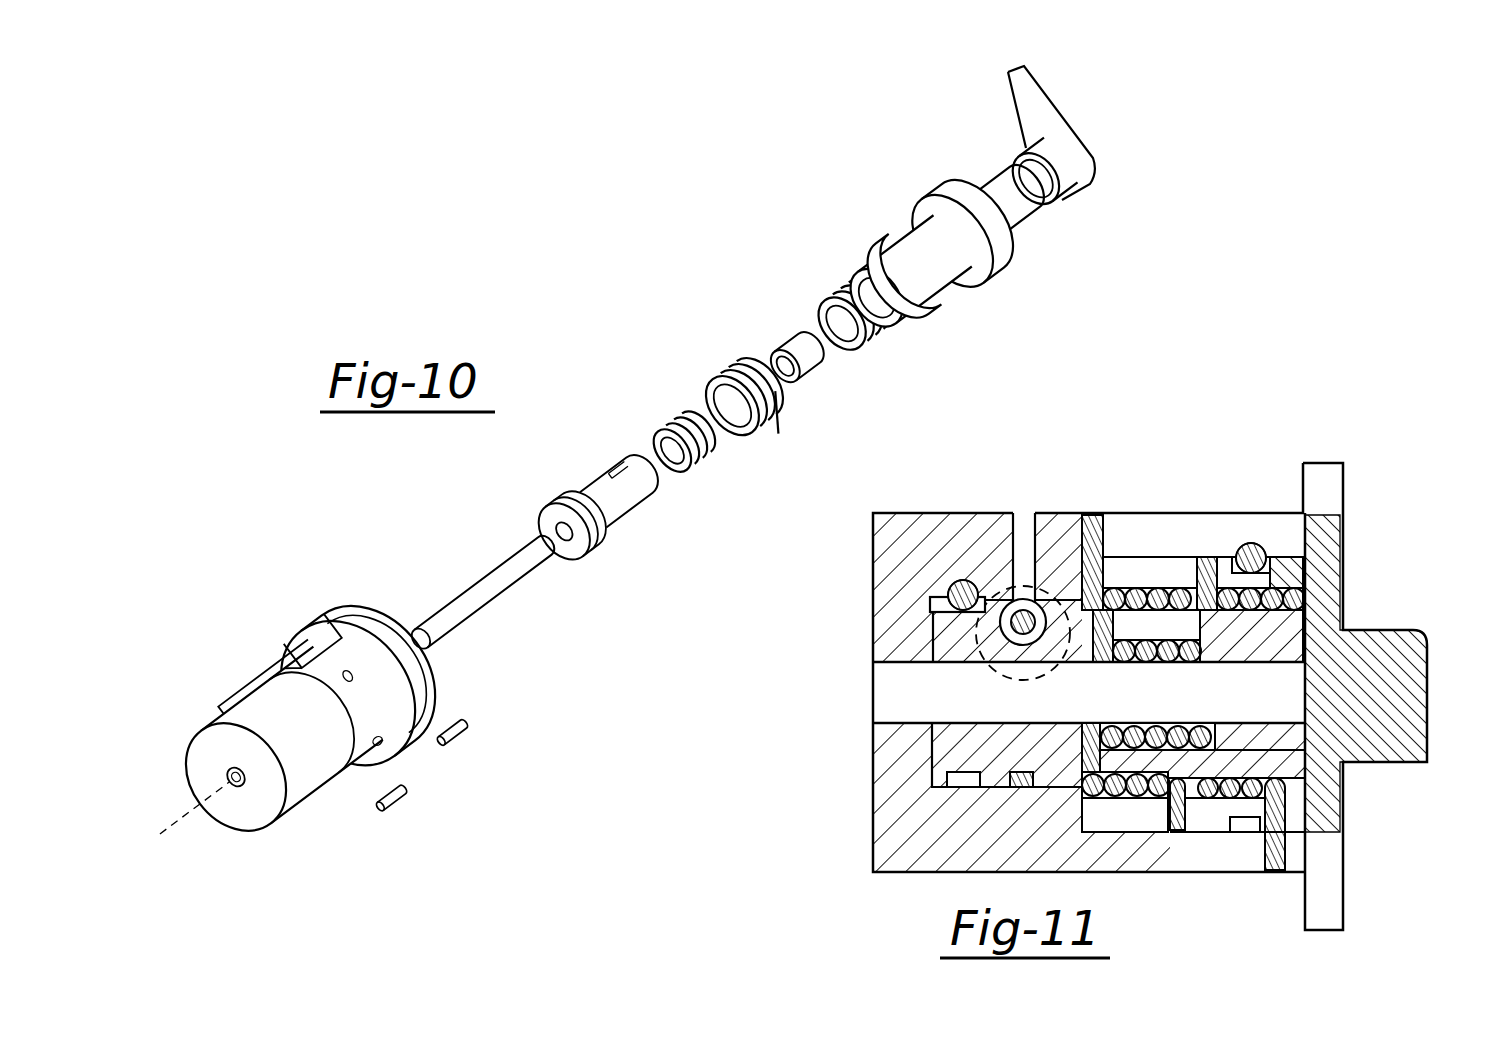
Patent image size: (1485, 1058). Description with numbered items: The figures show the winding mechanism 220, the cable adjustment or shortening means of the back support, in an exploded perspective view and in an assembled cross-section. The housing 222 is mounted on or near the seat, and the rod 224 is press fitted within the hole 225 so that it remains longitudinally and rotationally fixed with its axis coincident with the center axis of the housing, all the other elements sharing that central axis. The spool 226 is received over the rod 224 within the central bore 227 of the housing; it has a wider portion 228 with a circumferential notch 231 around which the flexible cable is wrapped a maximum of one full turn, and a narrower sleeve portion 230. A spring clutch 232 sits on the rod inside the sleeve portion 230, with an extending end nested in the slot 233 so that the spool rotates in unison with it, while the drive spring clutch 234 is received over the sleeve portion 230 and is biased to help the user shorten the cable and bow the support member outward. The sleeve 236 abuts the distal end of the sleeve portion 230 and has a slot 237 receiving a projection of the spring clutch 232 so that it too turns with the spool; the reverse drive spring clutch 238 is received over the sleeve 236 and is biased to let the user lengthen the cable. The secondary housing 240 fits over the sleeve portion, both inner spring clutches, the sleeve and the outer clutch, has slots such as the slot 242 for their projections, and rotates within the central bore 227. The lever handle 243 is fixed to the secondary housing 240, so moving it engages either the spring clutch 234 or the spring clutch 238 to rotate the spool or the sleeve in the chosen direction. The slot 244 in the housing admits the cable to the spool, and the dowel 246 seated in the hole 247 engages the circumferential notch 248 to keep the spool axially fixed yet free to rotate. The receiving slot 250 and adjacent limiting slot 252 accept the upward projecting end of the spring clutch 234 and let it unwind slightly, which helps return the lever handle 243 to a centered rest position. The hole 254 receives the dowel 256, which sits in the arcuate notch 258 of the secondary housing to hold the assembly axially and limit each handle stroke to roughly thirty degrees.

In FIG. 10, the winding mechanism 220 is at (583, 371).
In FIG. 11, the winding mechanism 220 is at (1240, 445).
In FIG. 10, the housing 222 is at (312, 810).
In FIG. 11, the housing 222 is at (873, 560).
In FIG. 10, the rod 224 is at (485, 572).
In FIG. 11, the rod 224 is at (1053, 708).
In FIG. 10, the hole 225 is at (225, 785).
In FIG. 10, the spool 226 is at (591, 473).
In FIG. 11, the central bore 227 is at (1180, 560).
In FIG. 10, the portion 228 is at (565, 495).
In FIG. 11, the portion 228 is at (932, 735).
In FIG. 10, the sleeve portion 230 is at (635, 527).
In FIG. 10, the circumferential notch 231 is at (615, 543).
In FIG. 11, the circumferential notch 231 is at (1030, 612).
In FIG. 10, the spring clutch 232 is at (680, 440).
In FIG. 11, the spring clutch 232 is at (1168, 565).
In FIG. 10, the slot 233 is at (647, 465).
In FIG. 10, the spring clutch 234 is at (747, 372).
In FIG. 11, the spring clutch 234 is at (1140, 640).
In FIG. 10, the sleeve 236 is at (800, 340).
In FIG. 10, the slot 237 is at (790, 385).
In FIG. 10, the spring clutch 238 is at (848, 300).
In FIG. 11, the spring clutch 238 is at (1207, 570).
In FIG. 10, the secondary housing 240 is at (978, 315).
In FIG. 11, the secondary housing 240 is at (1347, 598).
In FIG. 10, the slot 242 is at (925, 225).
In FIG. 10, the lever handle 243 is at (1098, 125).
In FIG. 10, the slot 244 is at (248, 690).
In FIG. 11, the slot 244 is at (1016, 600).
In FIG. 10, the dowel 246 is at (392, 810).
In FIG. 11, the dowel 246 is at (958, 590).
In FIG. 10, the hole 247 is at (255, 693).
In FIG. 10, the circumferential notch 248 is at (595, 560).
In FIG. 11, the circumferential notch 248 is at (962, 797).
In FIG. 10, the receiving slot 250 is at (395, 765).
In FIG. 10, the limiting slot 252 is at (262, 672).
In FIG. 10, the hole 254 is at (358, 668).
In FIG. 10, the dowel 256 is at (468, 745).
In FIG. 11, the dowel 256 is at (1255, 545).
In FIG. 10, the arcuate notch 258 is at (1000, 290).
In FIG. 11, the arcuate notch 258 is at (1258, 825).